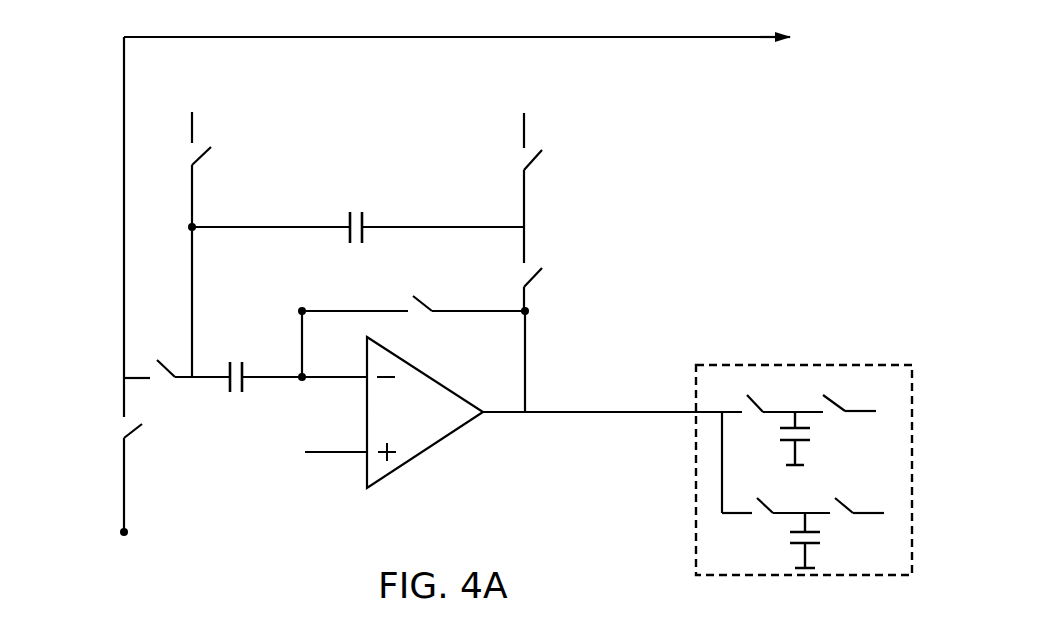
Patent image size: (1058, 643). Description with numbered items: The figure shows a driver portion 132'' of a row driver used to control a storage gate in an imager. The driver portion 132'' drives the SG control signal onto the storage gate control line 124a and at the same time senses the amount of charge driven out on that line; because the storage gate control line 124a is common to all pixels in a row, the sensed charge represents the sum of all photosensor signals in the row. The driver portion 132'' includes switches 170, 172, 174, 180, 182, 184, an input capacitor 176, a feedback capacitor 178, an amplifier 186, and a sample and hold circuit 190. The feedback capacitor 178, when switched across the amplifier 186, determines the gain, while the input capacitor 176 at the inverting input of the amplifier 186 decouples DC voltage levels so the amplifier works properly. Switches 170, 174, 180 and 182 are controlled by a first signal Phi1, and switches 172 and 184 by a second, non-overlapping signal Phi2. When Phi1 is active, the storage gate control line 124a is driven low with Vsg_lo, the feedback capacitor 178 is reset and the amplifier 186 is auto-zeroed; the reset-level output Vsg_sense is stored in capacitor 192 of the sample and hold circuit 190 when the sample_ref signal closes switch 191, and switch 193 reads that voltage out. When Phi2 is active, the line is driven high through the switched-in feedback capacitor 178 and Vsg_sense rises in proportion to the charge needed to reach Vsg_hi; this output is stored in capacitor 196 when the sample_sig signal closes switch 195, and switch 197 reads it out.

The driver portion 132'' is at (402, 213).
The storage gate control line 124a is at (755, 38).
The switch 170 is at (133, 431).
The switch 172 is at (158, 380).
The switch 174 is at (205, 140).
The input capacitor 176 is at (233, 394).
The feedback capacitor 178 is at (363, 222).
The switch 180 is at (428, 305).
The switch 182 is at (540, 146).
The switch 184 is at (542, 258).
The amplifier 186 is at (440, 445).
The sample and hold circuit 190 is at (705, 366).
The switch 191 is at (749, 416).
The storage capacitor 192 is at (809, 433).
The switch 193 is at (840, 418).
The switch 195 is at (756, 518).
The storage capacitor 196 is at (818, 540).
The switch 197 is at (846, 518).